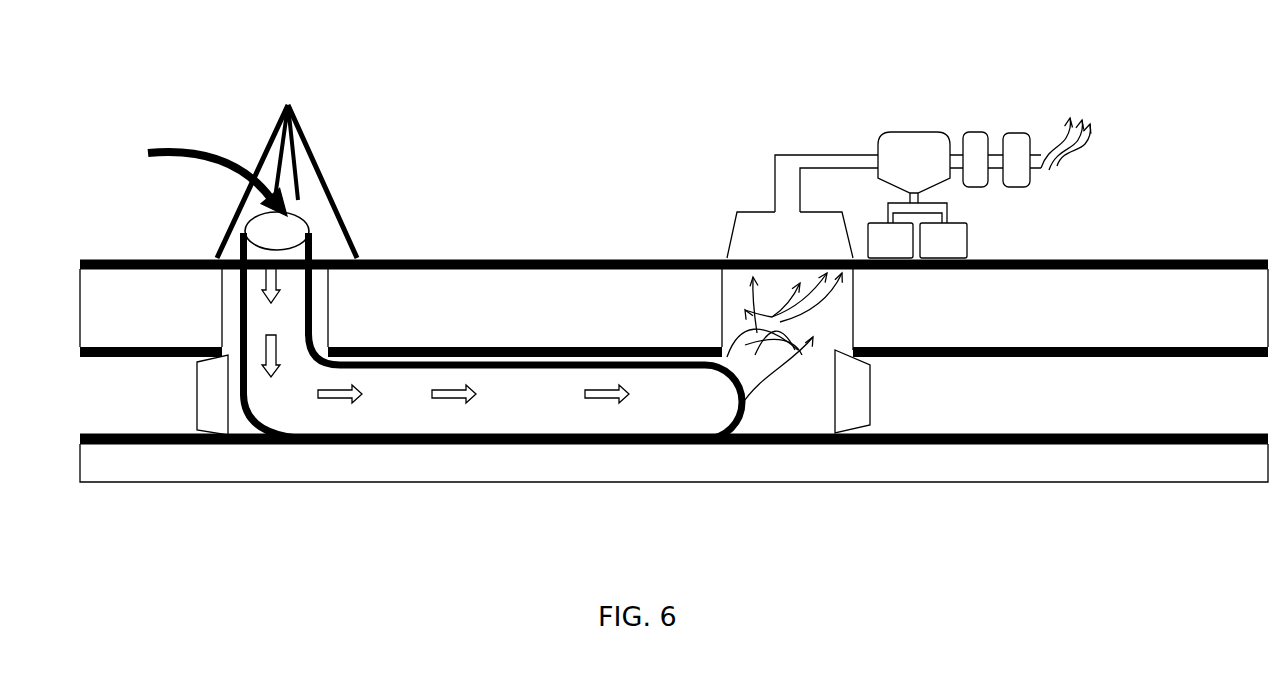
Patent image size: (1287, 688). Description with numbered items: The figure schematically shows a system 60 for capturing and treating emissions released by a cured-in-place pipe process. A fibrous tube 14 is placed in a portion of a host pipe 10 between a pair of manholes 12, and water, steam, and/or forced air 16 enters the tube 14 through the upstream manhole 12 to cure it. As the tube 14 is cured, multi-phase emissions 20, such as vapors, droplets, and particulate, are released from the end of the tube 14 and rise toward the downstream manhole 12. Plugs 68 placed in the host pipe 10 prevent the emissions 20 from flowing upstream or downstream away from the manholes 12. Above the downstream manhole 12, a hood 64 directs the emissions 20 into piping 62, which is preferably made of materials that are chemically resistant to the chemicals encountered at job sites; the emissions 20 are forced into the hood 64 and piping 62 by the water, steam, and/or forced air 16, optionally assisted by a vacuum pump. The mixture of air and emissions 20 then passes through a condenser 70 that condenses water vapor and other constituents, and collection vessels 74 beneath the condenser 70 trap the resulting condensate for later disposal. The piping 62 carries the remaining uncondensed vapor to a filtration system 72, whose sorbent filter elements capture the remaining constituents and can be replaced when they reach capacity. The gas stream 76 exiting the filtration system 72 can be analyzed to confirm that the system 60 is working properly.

The host pipe 10 is at (113, 357).
The manholes 12 is at (320, 256).
The fibrous tube 14 is at (313, 328).
The water, steam, and/or forced air 16 is at (180, 148).
The emissions 20 is at (728, 315).
The system 60 is at (498, 80).
The piping 62 is at (778, 190).
The hood 64 is at (733, 227).
The plugs 68 is at (205, 410).
The condenser 70 is at (918, 120).
The filtration system 72 is at (993, 123).
The collection vessels 74 is at (982, 242).
The gas stream 76 is at (1077, 147).